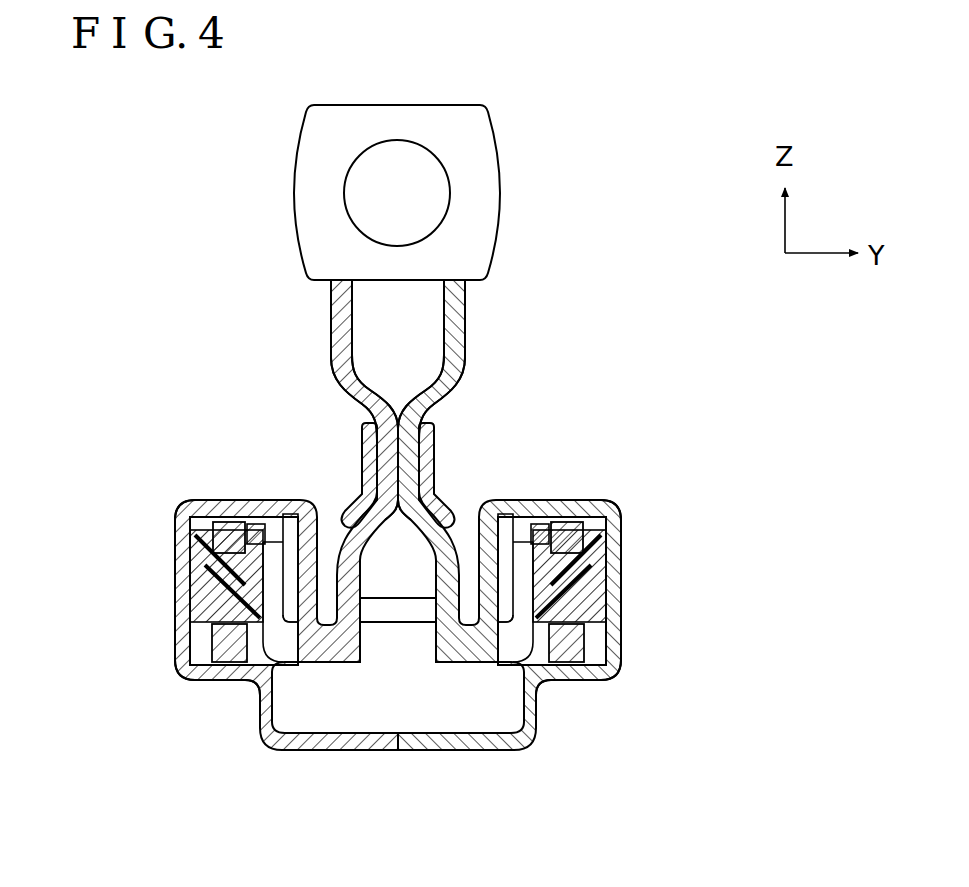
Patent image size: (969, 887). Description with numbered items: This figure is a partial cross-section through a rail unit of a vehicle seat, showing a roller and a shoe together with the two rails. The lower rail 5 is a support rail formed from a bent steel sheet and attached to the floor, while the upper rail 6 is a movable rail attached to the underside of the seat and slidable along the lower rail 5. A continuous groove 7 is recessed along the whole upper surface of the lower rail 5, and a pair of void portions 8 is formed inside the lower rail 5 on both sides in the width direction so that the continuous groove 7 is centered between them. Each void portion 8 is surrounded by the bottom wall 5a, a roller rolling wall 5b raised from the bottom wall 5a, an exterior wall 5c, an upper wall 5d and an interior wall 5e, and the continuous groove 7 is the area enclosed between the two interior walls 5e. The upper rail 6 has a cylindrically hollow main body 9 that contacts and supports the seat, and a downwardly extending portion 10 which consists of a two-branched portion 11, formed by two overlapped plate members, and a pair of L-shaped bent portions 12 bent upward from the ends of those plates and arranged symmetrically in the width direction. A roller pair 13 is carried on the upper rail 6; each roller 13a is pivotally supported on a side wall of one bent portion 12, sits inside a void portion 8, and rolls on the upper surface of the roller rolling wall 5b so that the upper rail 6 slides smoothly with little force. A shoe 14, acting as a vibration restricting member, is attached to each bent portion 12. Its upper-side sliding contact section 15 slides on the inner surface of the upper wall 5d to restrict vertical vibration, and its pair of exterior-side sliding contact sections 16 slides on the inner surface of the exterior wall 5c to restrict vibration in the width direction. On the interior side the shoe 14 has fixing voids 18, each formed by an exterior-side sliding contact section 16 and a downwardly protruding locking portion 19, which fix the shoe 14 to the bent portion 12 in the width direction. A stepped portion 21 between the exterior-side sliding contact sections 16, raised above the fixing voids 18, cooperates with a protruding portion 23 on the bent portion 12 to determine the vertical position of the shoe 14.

The lower rail 5 is at (535, 733).
The bottom wall 5a is at (293, 750).
The roller rolling wall 5b is at (232, 677).
The exterior wall 5c is at (175, 612).
The upper wall 5d is at (223, 502).
The interior wall 5e is at (452, 577).
The upper rail 6 is at (498, 150).
The continuous groove 7 is at (478, 508).
The void portion 8 is at (178, 630).
The main body 9 is at (498, 220).
The downwardly extending portion 10 is at (607, 797).
The two-branched portion 11 is at (438, 660).
The bent portion 12 is at (287, 660).
The roller pair 13 is at (562, 418).
The roller 13a is at (233, 503).
The shoe 14 is at (177, 650).
The upper-side sliding contact section 15 is at (267, 517).
The exterior-side sliding contact section 16 is at (178, 585).
The fixing void 18 is at (312, 517).
The locking portion 19 is at (295, 630).
The stepped portion 21 is at (195, 513).
The protruding portion 23 is at (195, 553).